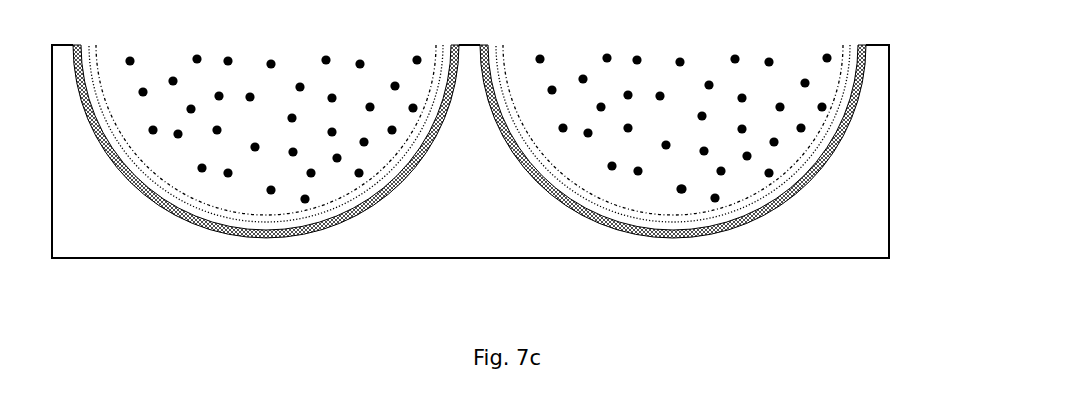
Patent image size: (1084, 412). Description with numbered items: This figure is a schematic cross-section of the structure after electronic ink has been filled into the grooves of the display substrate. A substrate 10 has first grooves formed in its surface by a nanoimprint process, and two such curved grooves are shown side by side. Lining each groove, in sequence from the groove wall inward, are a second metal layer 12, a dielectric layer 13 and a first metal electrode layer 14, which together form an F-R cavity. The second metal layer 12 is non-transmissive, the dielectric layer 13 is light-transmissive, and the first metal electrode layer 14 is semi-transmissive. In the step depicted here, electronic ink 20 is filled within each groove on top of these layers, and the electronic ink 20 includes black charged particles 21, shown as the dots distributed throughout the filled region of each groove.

The substrate 10 is at (845, 213).
The second metal layer 12 is at (255, 235).
The dielectric layer 13 is at (289, 226).
The first metal electrode layer 14 is at (318, 215).
The electronic ink 20 is at (813, 127).
The black charged particles 21 is at (808, 83).